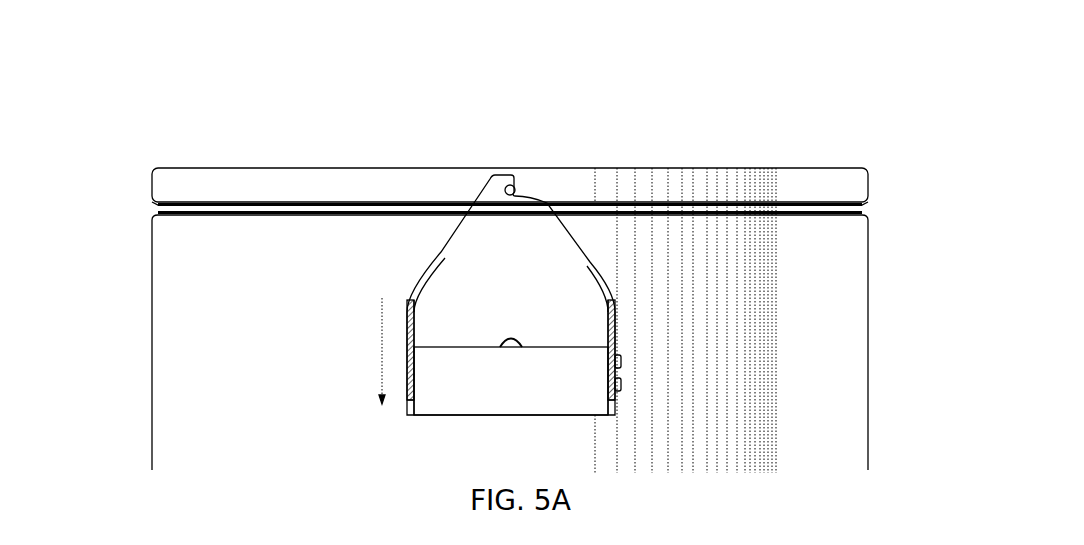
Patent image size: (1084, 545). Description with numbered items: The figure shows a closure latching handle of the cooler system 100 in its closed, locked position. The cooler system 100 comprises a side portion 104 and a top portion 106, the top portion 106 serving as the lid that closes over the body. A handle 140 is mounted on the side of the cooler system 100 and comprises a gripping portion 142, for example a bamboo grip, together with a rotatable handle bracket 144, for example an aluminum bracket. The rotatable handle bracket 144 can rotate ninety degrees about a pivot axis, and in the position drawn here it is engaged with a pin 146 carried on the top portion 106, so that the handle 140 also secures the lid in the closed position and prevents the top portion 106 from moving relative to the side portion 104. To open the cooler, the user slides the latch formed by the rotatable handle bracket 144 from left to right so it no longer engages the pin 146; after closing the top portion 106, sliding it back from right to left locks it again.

The cooler system 100 is at (118, 348).
The side portion 104 is at (878, 286).
The top portion 106 is at (804, 162).
The handle 140 is at (394, 431).
The gripping portion 142 is at (568, 388).
The rotatable handle bracket 144 is at (465, 263).
The pin 146 is at (512, 185).